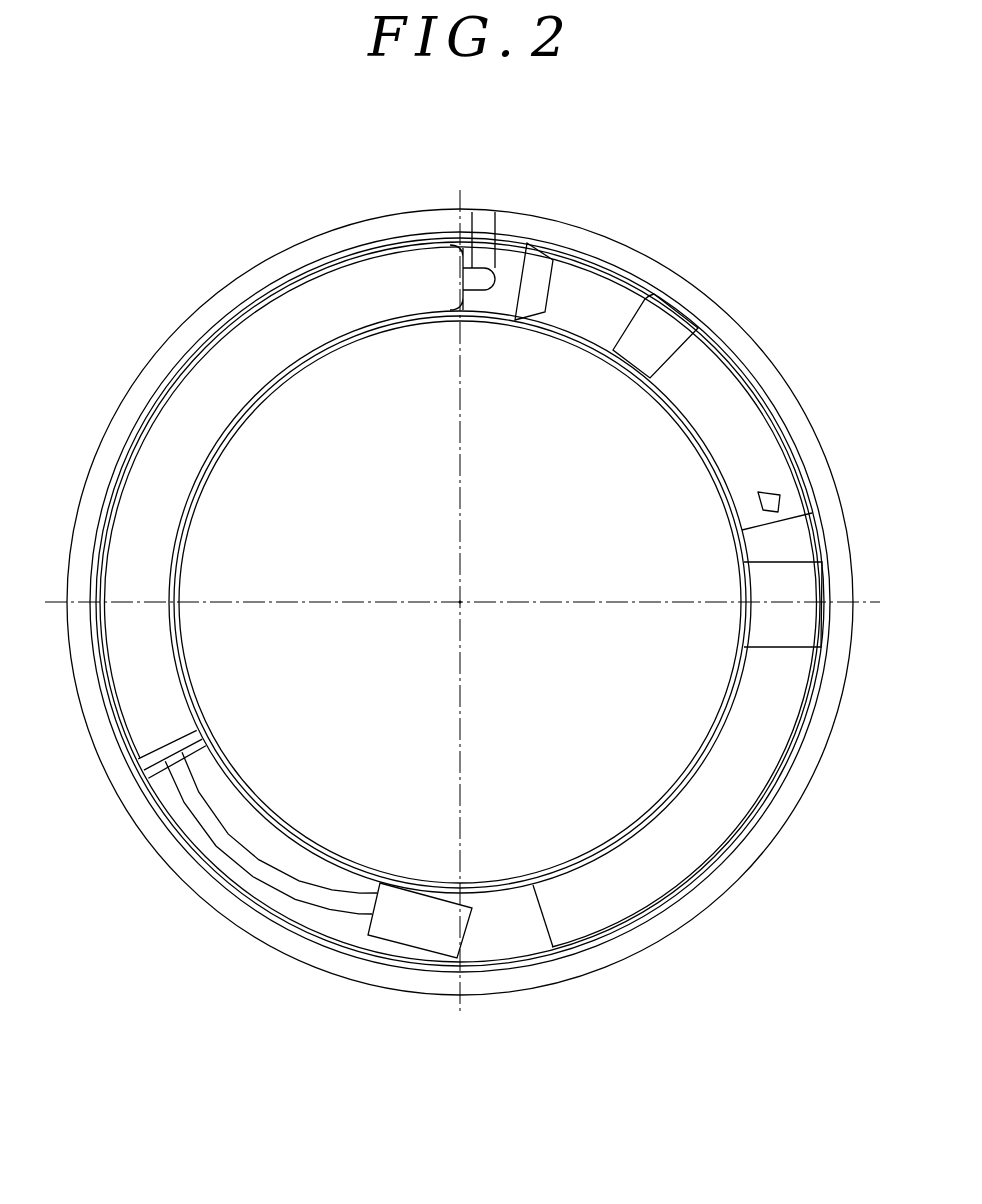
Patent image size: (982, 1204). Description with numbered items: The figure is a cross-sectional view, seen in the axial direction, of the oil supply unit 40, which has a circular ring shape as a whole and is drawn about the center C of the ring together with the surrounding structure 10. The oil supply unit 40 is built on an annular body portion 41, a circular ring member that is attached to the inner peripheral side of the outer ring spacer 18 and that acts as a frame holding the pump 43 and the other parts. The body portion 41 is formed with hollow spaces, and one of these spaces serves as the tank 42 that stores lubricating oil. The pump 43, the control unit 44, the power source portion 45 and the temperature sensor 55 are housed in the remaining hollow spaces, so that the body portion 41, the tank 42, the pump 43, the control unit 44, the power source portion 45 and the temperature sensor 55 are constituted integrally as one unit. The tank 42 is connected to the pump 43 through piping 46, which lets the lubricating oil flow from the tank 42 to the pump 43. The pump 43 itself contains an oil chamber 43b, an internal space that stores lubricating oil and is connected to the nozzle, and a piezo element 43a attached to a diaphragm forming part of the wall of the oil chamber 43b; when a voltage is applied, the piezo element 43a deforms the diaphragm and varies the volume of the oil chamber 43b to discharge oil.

The housing 10 is at (713, 906).
The outer ring spacer 18 is at (348, 228).
The oil supply unit 40 is at (282, 285).
The body portion 41 is at (196, 888).
The tank 42 is at (187, 350).
The pump 43 is at (412, 893).
The piezo element 43a is at (397, 960).
The oil chamber 43b is at (436, 915).
The control unit 44 is at (742, 418).
The power source portion 45 is at (772, 579).
The piping 46 is at (282, 905).
The temperature sensor 55 is at (757, 498).
The center axis C is at (462, 600).